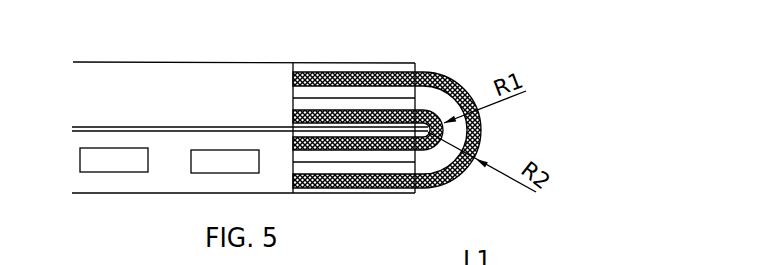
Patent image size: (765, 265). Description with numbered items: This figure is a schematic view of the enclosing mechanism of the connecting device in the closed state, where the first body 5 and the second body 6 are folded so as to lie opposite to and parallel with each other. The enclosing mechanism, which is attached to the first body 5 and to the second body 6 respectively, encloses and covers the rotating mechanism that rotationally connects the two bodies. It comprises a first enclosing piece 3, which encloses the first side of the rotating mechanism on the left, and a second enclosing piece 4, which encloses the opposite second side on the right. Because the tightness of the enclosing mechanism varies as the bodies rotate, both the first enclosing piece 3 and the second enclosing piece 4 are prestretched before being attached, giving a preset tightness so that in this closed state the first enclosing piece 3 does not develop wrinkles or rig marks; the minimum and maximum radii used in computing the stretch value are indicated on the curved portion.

The first enclosing piece 3 is at (427, 149).
The second enclosing piece 4 is at (440, 78).
The first body 5 is at (132, 90).
The second body 6 is at (170, 172).